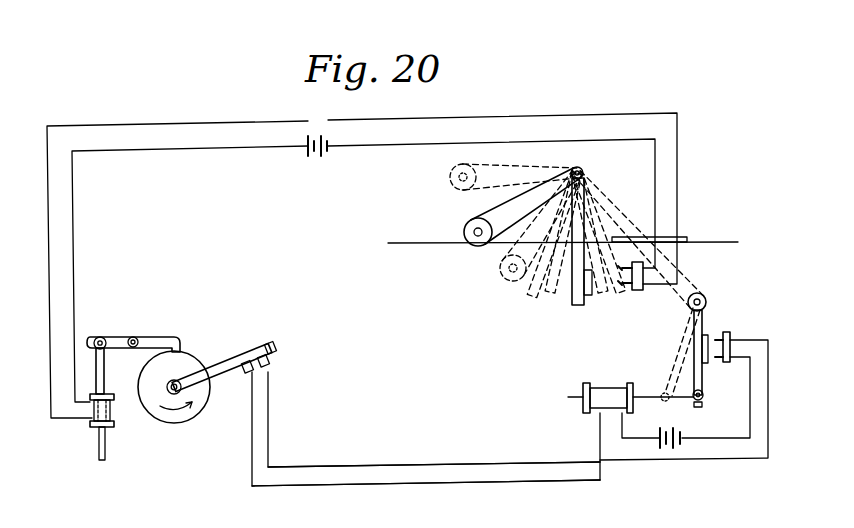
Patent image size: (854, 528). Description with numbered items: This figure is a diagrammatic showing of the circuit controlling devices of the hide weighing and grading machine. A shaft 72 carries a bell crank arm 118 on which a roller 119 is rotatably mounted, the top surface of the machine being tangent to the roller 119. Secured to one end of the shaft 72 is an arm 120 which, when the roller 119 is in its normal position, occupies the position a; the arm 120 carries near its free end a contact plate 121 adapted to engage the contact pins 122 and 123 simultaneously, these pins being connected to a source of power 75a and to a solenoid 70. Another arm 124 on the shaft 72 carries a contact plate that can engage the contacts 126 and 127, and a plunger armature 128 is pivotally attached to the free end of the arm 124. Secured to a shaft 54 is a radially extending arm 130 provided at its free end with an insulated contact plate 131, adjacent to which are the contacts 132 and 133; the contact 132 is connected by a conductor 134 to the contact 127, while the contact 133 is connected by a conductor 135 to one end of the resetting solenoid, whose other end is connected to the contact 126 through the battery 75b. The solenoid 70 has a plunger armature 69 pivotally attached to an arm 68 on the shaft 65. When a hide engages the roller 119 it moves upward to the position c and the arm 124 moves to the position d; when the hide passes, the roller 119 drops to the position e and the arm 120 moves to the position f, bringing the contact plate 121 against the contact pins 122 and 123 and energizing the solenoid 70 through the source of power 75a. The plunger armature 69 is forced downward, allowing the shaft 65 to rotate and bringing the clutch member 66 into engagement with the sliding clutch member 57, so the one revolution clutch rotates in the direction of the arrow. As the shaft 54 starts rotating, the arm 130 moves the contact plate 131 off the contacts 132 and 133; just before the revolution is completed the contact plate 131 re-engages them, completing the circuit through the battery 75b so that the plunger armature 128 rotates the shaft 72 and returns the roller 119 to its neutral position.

The shaft 54 is at (172, 384).
The sliding clutch member 57 is at (184, 418).
The shaft 65 is at (137, 337).
The clutch member 66 is at (178, 336).
The arm 68 is at (104, 337).
The plunger armature 69 is at (105, 372).
The solenoid 70 is at (114, 414).
The shaft 72 is at (629, 212).
The source of power 75a is at (316, 160).
The battery 75b is at (676, 452).
The bell crank arm 118 is at (500, 214).
The roller 119 is at (465, 228).
The arm 120 is at (570, 302).
The contact plate 121 is at (600, 298).
The contact pin 122 is at (630, 263).
The contact pin 123 is at (638, 293).
The arm 124 is at (695, 368).
The contact 126 is at (726, 331).
The contact 127 is at (720, 386).
The plunger armature 128 is at (568, 399).
The radially extending arm 130 is at (222, 376).
The contact plate 131 is at (288, 338).
The contact 132 is at (272, 364).
The contact 133 is at (246, 360).
The conductor 134 is at (368, 463).
The conductor 135 is at (444, 482).
The position of arm a is at (577, 306).
The upward roller position c is at (450, 177).
The arm position d is at (662, 402).
The dropped roller position e is at (503, 272).
The arm position f is at (612, 298).